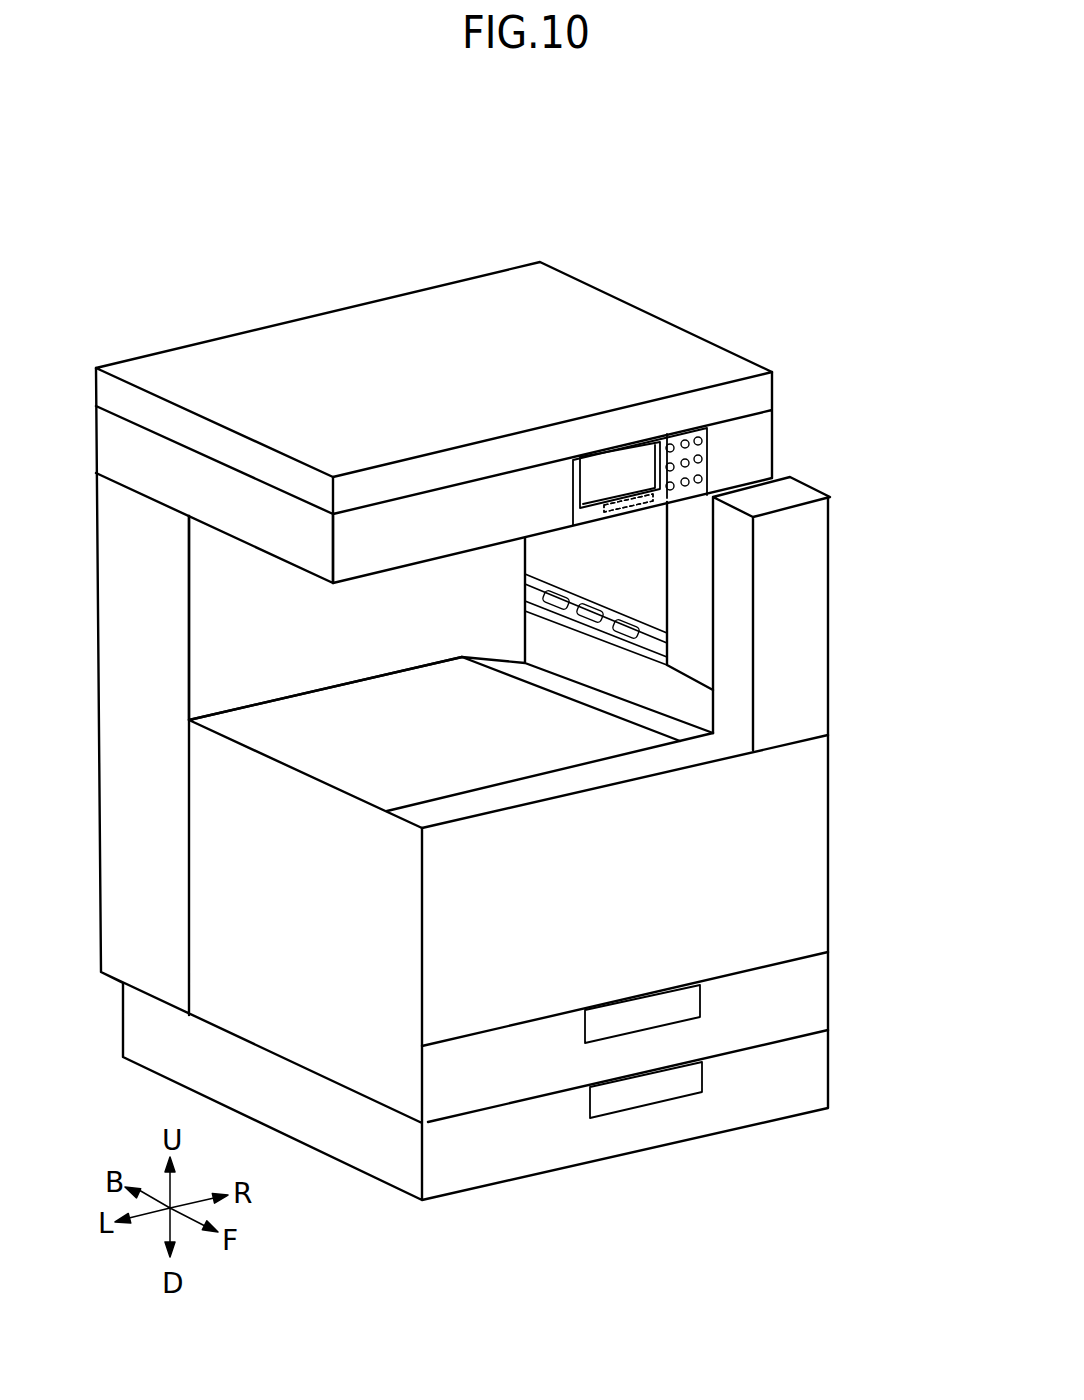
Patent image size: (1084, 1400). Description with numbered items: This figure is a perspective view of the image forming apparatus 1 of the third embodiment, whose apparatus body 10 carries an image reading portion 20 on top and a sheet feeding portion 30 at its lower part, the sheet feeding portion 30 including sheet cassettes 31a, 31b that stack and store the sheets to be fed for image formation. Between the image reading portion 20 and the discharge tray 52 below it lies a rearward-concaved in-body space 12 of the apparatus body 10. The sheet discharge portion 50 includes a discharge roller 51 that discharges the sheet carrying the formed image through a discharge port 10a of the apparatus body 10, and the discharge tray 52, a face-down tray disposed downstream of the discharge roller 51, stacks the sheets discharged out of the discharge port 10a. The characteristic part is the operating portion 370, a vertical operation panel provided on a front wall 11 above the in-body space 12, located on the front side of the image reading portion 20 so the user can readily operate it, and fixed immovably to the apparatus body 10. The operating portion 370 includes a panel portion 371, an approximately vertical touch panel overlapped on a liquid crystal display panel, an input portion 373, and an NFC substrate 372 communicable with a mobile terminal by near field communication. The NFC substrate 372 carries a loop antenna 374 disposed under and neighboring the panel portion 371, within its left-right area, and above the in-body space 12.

The image forming apparatus 1 is at (268, 221).
The image reading portion 20 is at (464, 254).
The operating portion 370 is at (727, 366).
The panel portion 371 is at (612, 462).
The NFC substrate 372 is at (565, 494).
The antenna 374 is at (604, 508).
The input portion 373 is at (703, 458).
The front wall 11 is at (358, 562).
The in-body space 12 is at (204, 667).
The discharge roller 51 is at (571, 589).
The discharge port 10a is at (534, 627).
The discharge tray 52 is at (424, 690).
The sheet discharge portion 50 is at (330, 766).
The apparatus body 10 is at (817, 758).
The sheet feeding portion 30 is at (866, 952).
The sheet cassette 31a is at (818, 998).
The sheet cassette 31b is at (818, 1080).